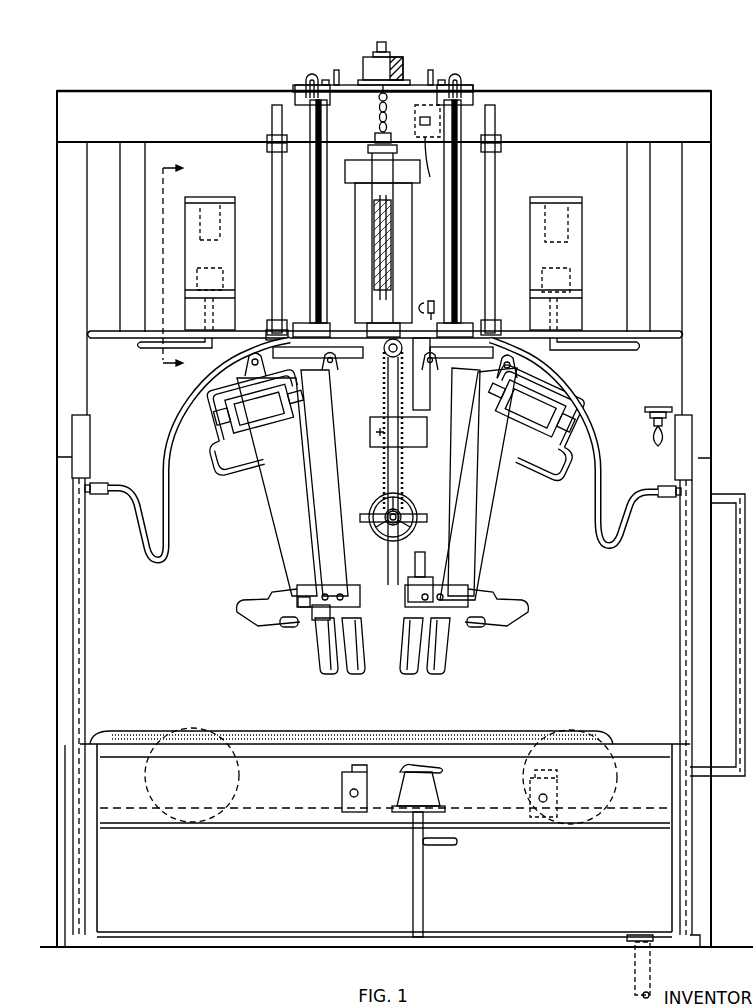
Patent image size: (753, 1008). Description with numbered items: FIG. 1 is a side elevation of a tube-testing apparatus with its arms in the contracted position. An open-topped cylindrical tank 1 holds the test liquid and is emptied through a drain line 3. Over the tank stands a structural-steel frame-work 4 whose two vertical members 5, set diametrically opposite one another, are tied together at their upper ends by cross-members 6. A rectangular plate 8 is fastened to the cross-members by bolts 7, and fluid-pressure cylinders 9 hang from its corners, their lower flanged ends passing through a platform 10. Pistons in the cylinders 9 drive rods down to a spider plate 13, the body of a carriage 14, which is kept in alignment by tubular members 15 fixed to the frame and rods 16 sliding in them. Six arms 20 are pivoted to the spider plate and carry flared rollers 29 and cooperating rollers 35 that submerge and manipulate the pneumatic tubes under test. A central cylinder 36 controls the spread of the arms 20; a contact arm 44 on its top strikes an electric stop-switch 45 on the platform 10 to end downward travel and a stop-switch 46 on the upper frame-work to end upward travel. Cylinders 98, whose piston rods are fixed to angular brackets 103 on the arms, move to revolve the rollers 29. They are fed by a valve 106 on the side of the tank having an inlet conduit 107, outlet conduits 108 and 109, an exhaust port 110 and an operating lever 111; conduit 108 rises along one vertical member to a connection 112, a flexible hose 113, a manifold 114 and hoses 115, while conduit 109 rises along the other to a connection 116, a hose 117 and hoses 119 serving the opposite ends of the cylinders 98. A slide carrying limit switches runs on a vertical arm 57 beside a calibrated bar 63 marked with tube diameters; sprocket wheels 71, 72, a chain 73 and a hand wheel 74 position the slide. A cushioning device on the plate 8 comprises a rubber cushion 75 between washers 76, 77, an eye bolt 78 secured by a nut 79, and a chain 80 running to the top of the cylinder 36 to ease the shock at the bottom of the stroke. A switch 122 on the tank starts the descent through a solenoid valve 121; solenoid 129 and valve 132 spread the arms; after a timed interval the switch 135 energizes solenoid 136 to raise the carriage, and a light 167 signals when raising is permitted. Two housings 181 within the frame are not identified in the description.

The tank 1 is at (252, 745).
The drain line 3 is at (632, 962).
The frame-work 4 is at (652, 90).
The vertical members 5 is at (60, 332).
The cross-members 6 is at (548, 135).
The bolts 7 is at (310, 84).
The rectangular plate 8 is at (293, 90).
The fluid-pressure cylinders 9 is at (272, 184).
The platform 10 is at (506, 330).
The spider plate 13 is at (463, 340).
The carriage 14 is at (345, 348).
The tubular members 15 is at (393, 234).
The rods 16 is at (386, 266).
The arms 20 is at (288, 534).
The flared rollers 29 is at (418, 670).
The rollers 35 is at (497, 624).
The arm-spreading cylinder 36 is at (363, 230).
The contact arm 44 is at (421, 162).
The electric stop-switch 45 is at (428, 301).
The stop-switch 46 is at (417, 138).
The vertical arm 57 is at (356, 507).
The calibrated bar 63 is at (362, 471).
The sprocket wheel 71 is at (403, 358).
The sprocket wheel 72 is at (406, 507).
The chain 73 is at (404, 468).
The hand wheel 74 is at (428, 528).
The cushion of rubber 75 is at (405, 73).
The washer 76 is at (400, 58).
The washer 77 is at (364, 80).
The eye bolt 78 is at (378, 100).
The nut 79 is at (386, 50).
The chain 80 is at (378, 120).
The cylinders 98 is at (258, 442).
The angular brackets 103 is at (210, 464).
The valve 106 is at (425, 802).
The inlet conduit 107 is at (423, 919).
The outlet conduit 108 is at (294, 829).
The outlet conduit 109 is at (598, 829).
The exhaust port 110 is at (437, 846).
The operating lever 111 is at (412, 770).
The connection 112 is at (108, 487).
The flexible hose 113 is at (169, 522).
The manifold 114 is at (284, 332).
The flexible hose 115 is at (214, 383).
The connection 116 is at (666, 501).
The flexible hose 117 is at (599, 499).
The flexible hose 119 is at (481, 386).
The valve 121 is at (223, 277).
The switch 122 is at (341, 786).
The solenoid 129 is at (567, 226).
The valve 132 is at (569, 279).
The switch 135 is at (557, 792).
The solenoid 136 is at (221, 235).
The light 167 is at (655, 441).
The cylinder 181 is at (190, 197).